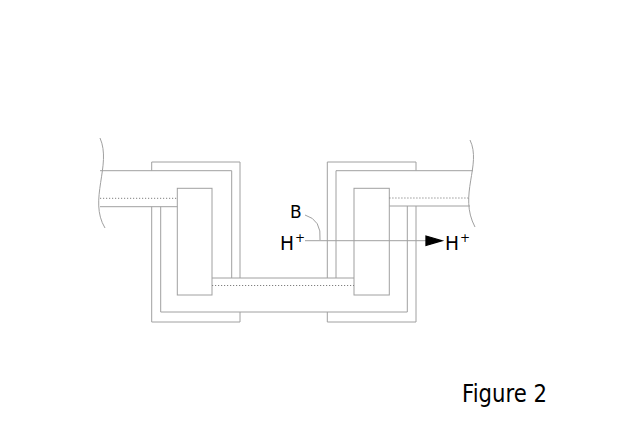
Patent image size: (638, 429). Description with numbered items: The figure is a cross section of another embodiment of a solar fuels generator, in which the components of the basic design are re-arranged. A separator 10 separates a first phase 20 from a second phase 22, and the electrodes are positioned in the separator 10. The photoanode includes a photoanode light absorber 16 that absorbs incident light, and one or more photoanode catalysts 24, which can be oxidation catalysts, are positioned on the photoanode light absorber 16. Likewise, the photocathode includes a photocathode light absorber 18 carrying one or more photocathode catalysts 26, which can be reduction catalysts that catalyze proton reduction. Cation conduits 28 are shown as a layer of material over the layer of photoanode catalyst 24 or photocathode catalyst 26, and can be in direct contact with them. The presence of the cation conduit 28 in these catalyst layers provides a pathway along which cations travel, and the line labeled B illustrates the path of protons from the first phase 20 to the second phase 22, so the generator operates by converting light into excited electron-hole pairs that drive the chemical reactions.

The separator 10 is at (195, 207).
The photoanode light absorber 16 is at (103, 190).
The photocathode light absorber 18 is at (107, 202).
The first phase 20 is at (118, 89).
The second phase 22 is at (90, 374).
The photoanode catalyst 24 is at (222, 188).
The photocathode catalyst 26 is at (168, 243).
The cation conduit 28 is at (157, 290).